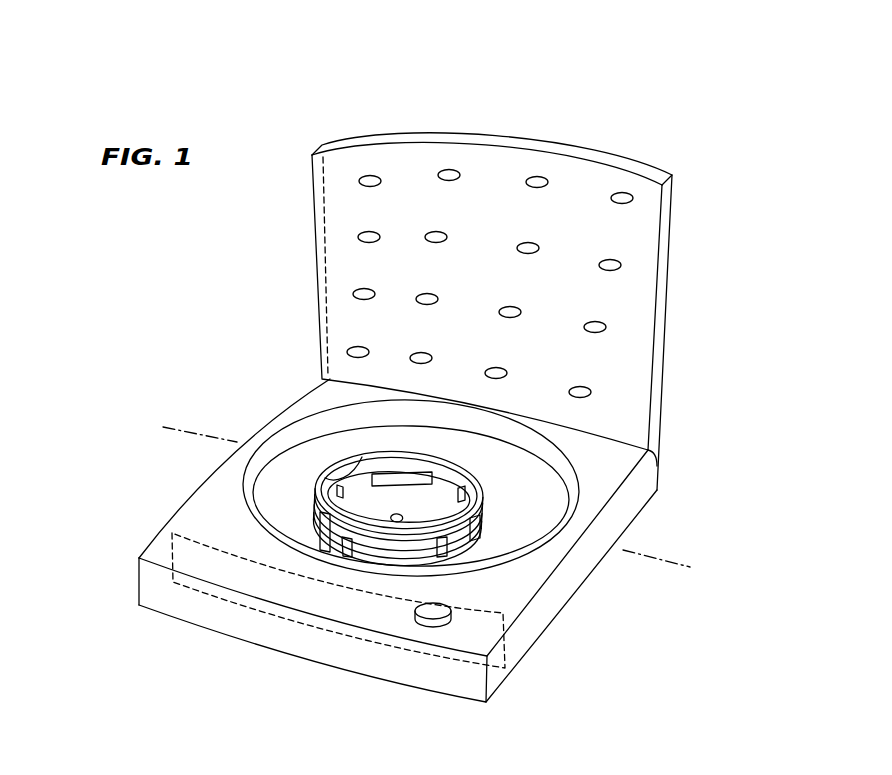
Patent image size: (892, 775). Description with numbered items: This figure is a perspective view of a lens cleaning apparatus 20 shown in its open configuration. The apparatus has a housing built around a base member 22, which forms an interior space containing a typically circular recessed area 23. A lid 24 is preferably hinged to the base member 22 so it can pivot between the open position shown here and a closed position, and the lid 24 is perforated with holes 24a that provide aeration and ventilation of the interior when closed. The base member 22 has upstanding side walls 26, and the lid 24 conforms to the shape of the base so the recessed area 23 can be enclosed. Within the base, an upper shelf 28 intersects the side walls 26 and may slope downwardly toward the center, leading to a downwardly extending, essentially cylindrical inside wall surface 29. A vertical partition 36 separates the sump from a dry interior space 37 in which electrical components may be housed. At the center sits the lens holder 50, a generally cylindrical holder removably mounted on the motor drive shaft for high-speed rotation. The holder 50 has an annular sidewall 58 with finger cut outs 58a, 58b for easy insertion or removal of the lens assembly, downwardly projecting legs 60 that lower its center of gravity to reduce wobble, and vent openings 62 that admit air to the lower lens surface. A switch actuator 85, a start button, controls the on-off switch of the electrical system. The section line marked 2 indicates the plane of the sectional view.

The lens cleaning apparatus 20 is at (242, 372).
The base member 22 is at (270, 416).
The recessed area 23 is at (317, 451).
The lid 24 is at (312, 256).
The holes 24a is at (633, 200).
The side walls 26 is at (515, 655).
The upper shelf 28 is at (598, 507).
The inside wall surface 29 is at (245, 458).
The vertical partition 36 is at (172, 533).
The dry interior space 37 is at (166, 598).
The lens holder 50 is at (491, 488).
The annular sidewall 58 is at (316, 504).
The finger cut out 58a is at (333, 466).
The finger cut out 58b is at (484, 508).
The legs 60 is at (470, 546).
The vent openings 62 is at (432, 476).
The switch actuator 85 is at (447, 611).
The section line 2- 2 is at (165, 437).